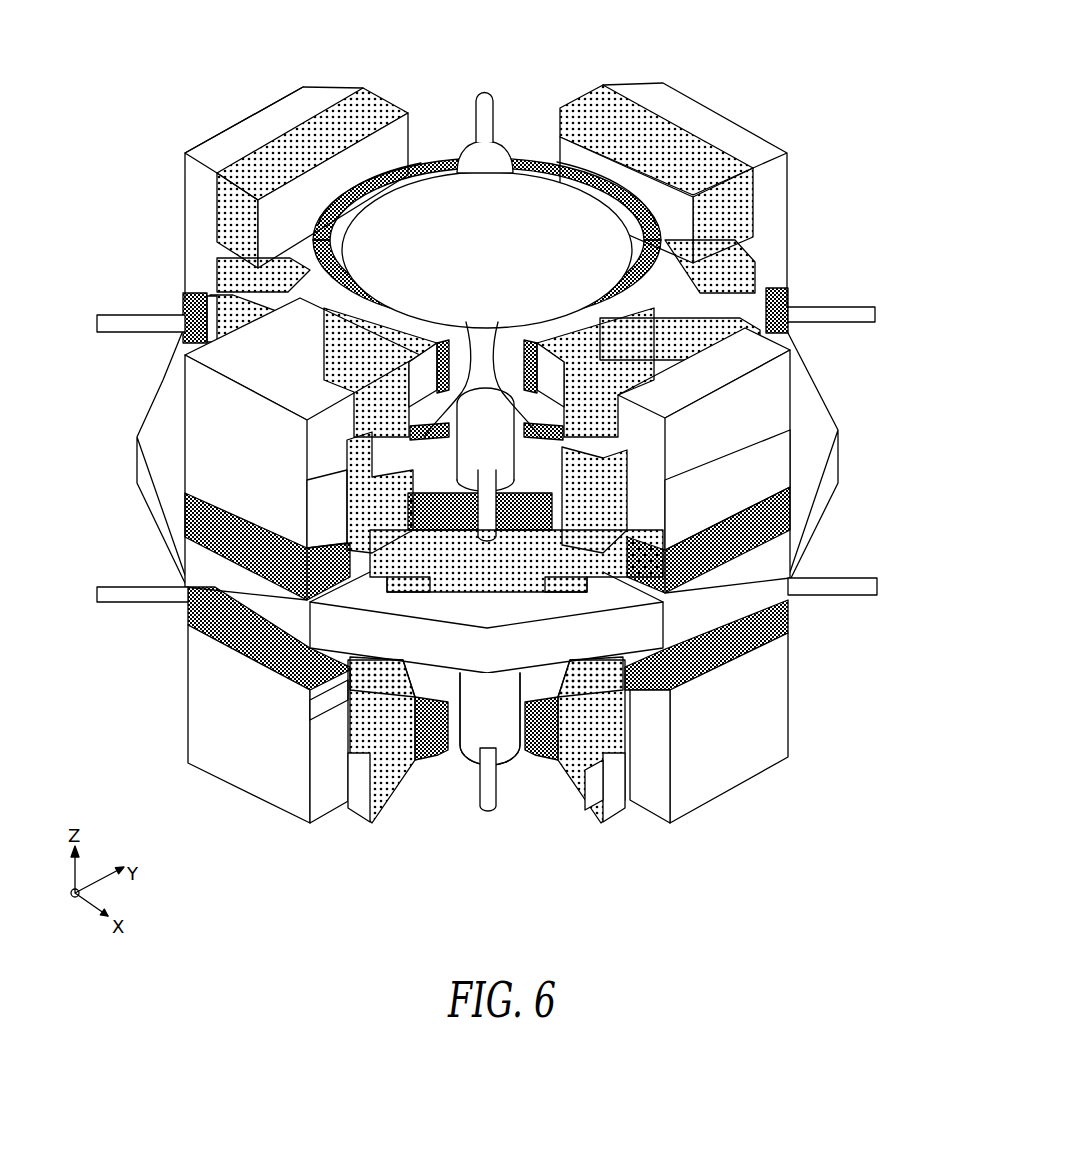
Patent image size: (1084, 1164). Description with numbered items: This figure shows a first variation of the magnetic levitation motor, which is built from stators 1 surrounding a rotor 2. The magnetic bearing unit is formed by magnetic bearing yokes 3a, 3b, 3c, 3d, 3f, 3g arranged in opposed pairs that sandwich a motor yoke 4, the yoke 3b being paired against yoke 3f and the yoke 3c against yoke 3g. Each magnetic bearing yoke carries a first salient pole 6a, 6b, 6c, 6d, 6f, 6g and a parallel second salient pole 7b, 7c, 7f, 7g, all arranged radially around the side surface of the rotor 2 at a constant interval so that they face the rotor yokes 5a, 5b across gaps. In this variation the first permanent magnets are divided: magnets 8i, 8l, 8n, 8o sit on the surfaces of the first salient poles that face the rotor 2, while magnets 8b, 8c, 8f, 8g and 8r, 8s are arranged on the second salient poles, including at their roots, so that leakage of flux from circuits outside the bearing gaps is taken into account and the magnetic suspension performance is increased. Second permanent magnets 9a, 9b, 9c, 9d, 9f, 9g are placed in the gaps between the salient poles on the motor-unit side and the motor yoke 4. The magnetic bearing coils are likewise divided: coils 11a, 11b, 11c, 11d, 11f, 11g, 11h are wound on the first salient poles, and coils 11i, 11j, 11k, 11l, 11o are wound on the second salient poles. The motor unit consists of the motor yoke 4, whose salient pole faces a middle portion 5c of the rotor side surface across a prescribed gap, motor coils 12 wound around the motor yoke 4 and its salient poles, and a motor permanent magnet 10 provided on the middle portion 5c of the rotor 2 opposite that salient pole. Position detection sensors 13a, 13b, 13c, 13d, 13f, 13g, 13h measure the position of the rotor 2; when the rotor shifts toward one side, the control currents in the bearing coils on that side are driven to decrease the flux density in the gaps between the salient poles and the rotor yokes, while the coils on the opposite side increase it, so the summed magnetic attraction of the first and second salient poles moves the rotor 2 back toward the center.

The stator 1 is at (242, 113).
The rotor 2 is at (445, 175).
The magnetic bearing yoke 3a is at (778, 140).
The magnetic bearing yoke 3b is at (780, 368).
The magnetic bearing yoke 3c is at (200, 417).
The magnetic bearing yoke 3d is at (187, 150).
The magnetic bearing yoke 3f is at (737, 763).
The magnetic bearing yoke 3g is at (232, 753).
The motor yoke 4 is at (853, 433).
The upper bearing 5a is at (522, 173).
The lower bearing 5b is at (522, 688).
The middle portion 5c is at (720, 580).
The first salient pole 6a is at (607, 163).
The first salient pole 6b is at (660, 235).
The first salient pole 6c is at (335, 292).
The first salient pole 6d is at (362, 163).
The first salient pole 6f is at (549, 742).
The first salient pole 6g is at (437, 745).
The second salient pole 7b is at (700, 498).
The second salient pole 7c is at (330, 500).
The second salient pole 7f is at (643, 742).
The second salient pole 7g is at (350, 757).
The first permanent magnet 8b is at (700, 420).
The first permanent magnet 8c is at (400, 492).
The first permanent magnet 8f is at (670, 690).
The first permanent magnet 8g is at (350, 693).
The first permanent magnet 8i is at (557, 162).
The first permanent magnet 8l is at (421, 162).
The first permanent magnet 8n is at (522, 700).
The first permanent magnet 8o is at (465, 745).
The first permanent magnet 8r is at (497, 330).
The first permanent magnet 8s is at (466, 345).
The second permanent magnet 9a is at (790, 303).
The second permanent magnet 9b is at (793, 477).
The second permanent magnet 9c is at (290, 520).
The second permanent magnet 9d is at (187, 302).
The second permanent magnet 9f is at (770, 645).
The second permanent magnet 9g is at (235, 640).
The motor permanent magnet 10 is at (300, 600).
The magnetic bearing coil 11a is at (670, 132).
The magnetic bearing coil 11b is at (788, 286).
The magnetic bearing coil 11c is at (220, 292).
The magnetic bearing coil 11d is at (295, 137).
The magnetic bearing coil 11f is at (583, 778).
The magnetic bearing coil 11g is at (393, 783).
The magnetic bearing coil 11h is at (605, 752).
The magnetic bearing coil 11i is at (770, 280).
The magnetic bearing coil 11j is at (700, 528).
The magnetic bearing coil 11k is at (290, 540).
The magnetic bearing coil 11l is at (335, 298).
The magnetic bearing coil 11o is at (330, 745).
The motor coil 12 is at (417, 570).
The position detection sensor 13a is at (470, 173).
The position detection sensor 13b is at (875, 314).
The position detection sensor 13c is at (793, 607).
The position detection sensor 13d is at (107, 330).
The position detection sensor 13f is at (855, 578).
The position detection sensor 13g is at (478, 768).
The position detection sensor 13h is at (127, 600).